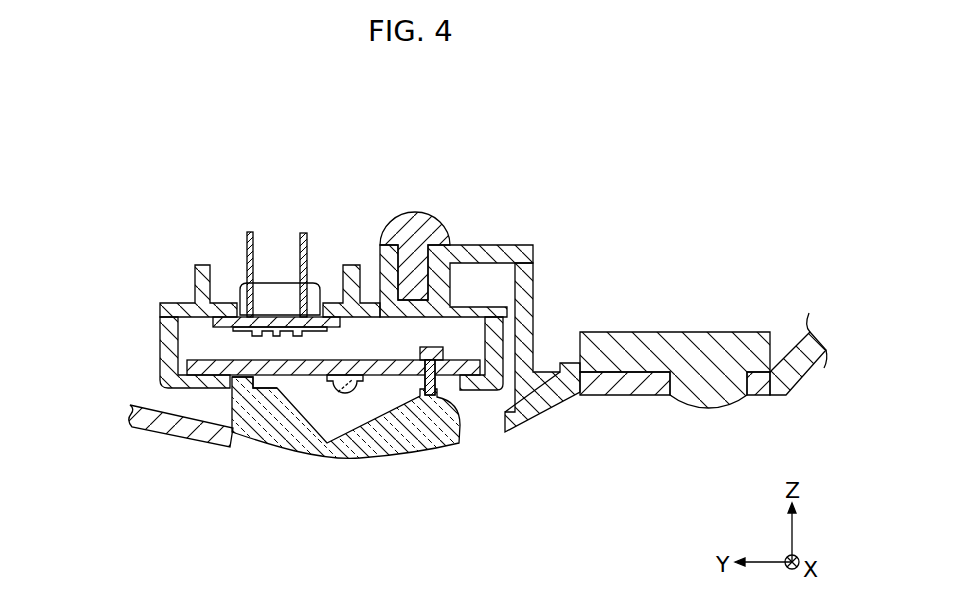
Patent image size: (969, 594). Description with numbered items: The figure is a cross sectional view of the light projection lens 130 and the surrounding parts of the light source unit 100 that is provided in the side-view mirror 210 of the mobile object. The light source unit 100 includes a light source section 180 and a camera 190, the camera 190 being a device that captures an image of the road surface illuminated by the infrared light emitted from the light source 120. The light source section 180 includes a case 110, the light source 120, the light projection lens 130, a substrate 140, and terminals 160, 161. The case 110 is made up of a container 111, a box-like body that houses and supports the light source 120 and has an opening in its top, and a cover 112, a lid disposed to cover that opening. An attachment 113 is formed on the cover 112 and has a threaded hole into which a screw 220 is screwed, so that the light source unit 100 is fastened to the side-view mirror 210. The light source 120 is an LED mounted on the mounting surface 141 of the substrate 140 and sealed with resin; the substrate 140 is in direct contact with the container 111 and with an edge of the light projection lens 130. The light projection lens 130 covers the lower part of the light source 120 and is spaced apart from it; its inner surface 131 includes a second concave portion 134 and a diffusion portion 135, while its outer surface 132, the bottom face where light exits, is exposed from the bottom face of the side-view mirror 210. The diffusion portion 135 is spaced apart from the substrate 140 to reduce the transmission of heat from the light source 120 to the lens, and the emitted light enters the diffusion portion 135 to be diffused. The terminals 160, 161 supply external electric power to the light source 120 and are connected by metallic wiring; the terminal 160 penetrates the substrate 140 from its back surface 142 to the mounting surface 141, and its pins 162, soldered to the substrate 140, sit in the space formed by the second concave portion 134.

The light source unit 100 is at (647, 159).
The case 110 is at (82, 262).
The container 111 is at (170, 350).
The cover 112 is at (200, 278).
The attachment 113 is at (441, 265).
The light source 120 is at (340, 390).
The light projection lens 130 is at (348, 460).
The inner surface 131 is at (396, 452).
The outer surface 132 is at (365, 468).
The second concave portion 134 is at (448, 386).
The diffusion portion 135 is at (266, 380).
The substrate 140 is at (202, 374).
The mounting surface 141 is at (302, 376).
The back surface 142 is at (377, 355).
The terminal 160 is at (487, 364).
The terminal 161 is at (254, 250).
The pins 162 is at (446, 398).
The light source section 180 is at (557, 226).
The camera 190 is at (683, 343).
The side-view mirror 210 is at (128, 430).
The screw 220 is at (421, 222).